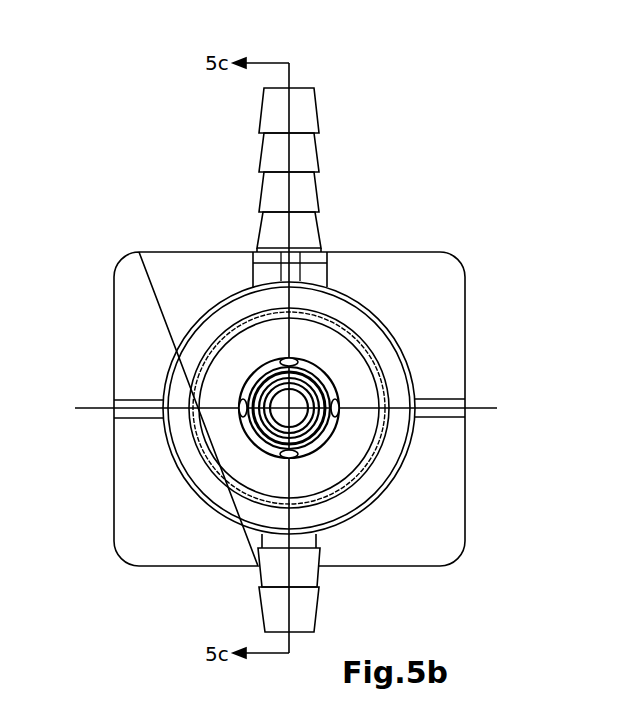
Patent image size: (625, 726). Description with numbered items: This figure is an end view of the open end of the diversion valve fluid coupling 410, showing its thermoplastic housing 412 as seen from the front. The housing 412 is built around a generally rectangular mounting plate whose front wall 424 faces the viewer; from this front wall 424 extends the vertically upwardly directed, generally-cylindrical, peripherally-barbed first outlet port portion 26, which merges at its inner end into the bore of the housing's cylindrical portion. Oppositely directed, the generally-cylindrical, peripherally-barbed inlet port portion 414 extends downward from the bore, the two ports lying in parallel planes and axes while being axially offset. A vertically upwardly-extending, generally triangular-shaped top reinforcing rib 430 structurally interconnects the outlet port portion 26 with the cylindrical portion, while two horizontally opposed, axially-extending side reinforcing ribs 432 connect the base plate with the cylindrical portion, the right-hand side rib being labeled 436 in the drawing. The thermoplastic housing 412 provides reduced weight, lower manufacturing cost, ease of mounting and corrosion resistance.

The first outlet port portion 26 is at (300, 115).
The coupling 410 is at (433, 160).
The thermoplastic housing 412 is at (150, 251).
The inlet port portion 414 is at (305, 610).
The mounting plate front wall 424 is at (440, 327).
The top reinforcing rib 430 is at (327, 262).
The side reinforcing ribs 432 is at (133, 403).
The right mounting boss 436 is at (438, 415).